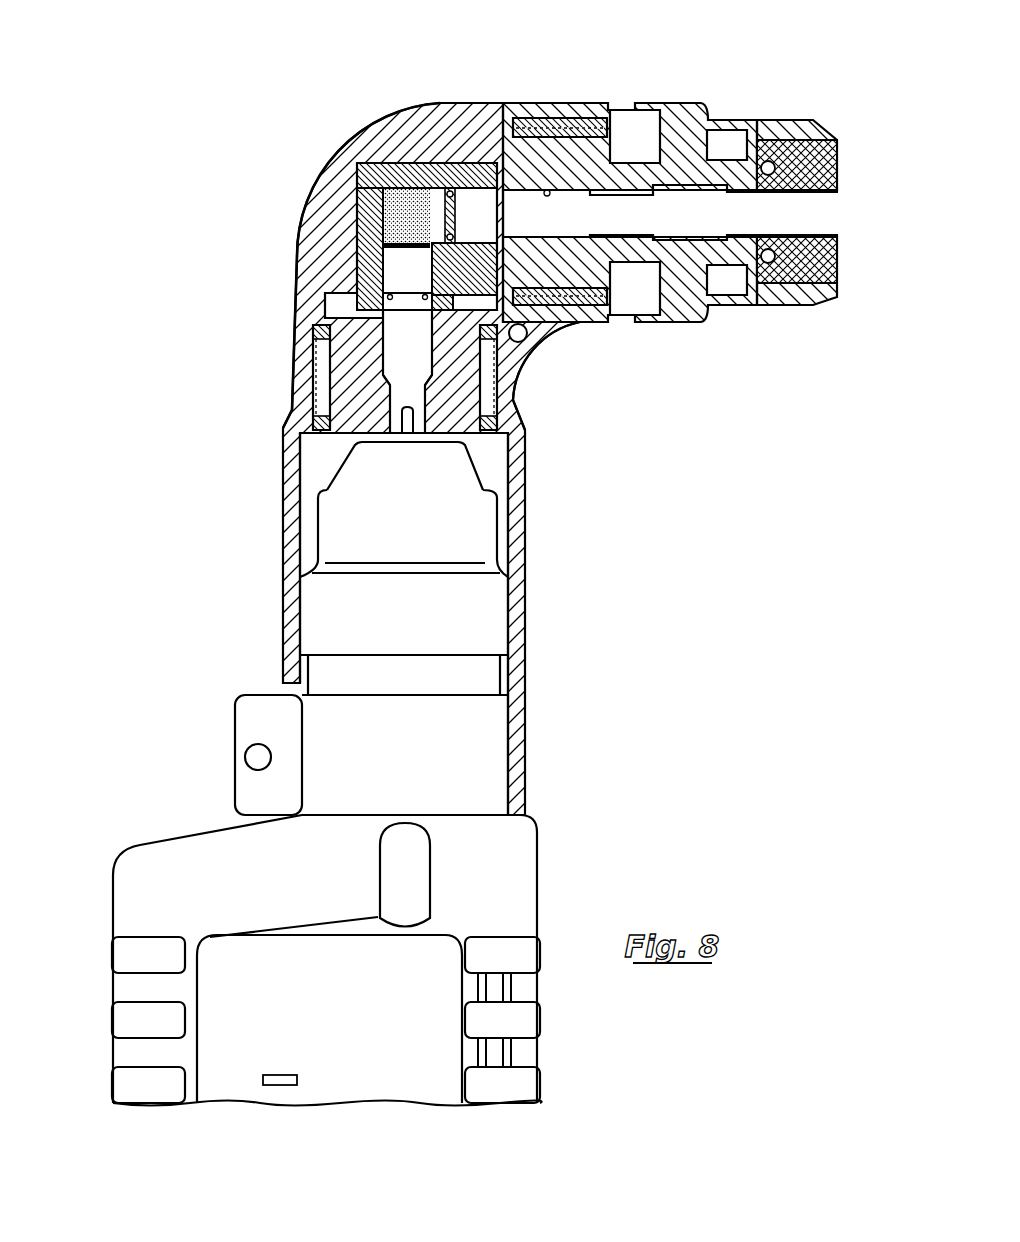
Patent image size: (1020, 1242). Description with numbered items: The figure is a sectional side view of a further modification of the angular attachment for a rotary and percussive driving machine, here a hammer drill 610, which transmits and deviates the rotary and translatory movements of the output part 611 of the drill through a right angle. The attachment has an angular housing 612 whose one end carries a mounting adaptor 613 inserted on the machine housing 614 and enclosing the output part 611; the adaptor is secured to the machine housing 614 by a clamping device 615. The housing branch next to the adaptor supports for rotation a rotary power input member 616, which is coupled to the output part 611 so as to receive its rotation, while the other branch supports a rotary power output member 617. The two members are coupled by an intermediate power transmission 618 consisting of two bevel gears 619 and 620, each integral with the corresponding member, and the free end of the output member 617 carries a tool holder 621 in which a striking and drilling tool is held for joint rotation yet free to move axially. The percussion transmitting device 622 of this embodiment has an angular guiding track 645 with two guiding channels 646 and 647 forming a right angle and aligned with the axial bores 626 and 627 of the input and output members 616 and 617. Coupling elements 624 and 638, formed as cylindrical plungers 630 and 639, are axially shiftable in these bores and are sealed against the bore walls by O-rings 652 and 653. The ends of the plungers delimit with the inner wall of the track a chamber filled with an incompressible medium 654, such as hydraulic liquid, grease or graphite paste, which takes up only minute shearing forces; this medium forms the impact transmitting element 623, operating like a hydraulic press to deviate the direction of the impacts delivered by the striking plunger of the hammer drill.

The hammer drill 610 is at (338, 997).
The output part 611 is at (473, 527).
The angular housing 612 is at (378, 137).
The mounting adaptor 613 is at (397, 624).
The machine housing 614 is at (361, 958).
The clamping device 615 is at (247, 718).
The rotary power input member 616 is at (510, 404).
The rotary power output member 617 is at (577, 208).
The intermediate power transmission 618 is at (528, 327).
The bevel gear 619 is at (325, 301).
The bevel gear 620 is at (482, 140).
The tool holder 621 is at (815, 215).
The percussion transmitting device 622 is at (352, 227).
The impact transmitting element 623 is at (378, 206).
The coupling element 624 is at (398, 366).
The axial bore 626 is at (402, 354).
The axial bore 627 is at (549, 190).
The cylindrical plunger 630 is at (320, 392).
The coupling element 638 is at (590, 222).
The cylindrical plunger 639 is at (707, 123).
The angular guiding track 645 is at (405, 163).
The guiding channel 646 is at (383, 270).
The guiding channel 647 is at (460, 162).
The O-ring 652 is at (340, 318).
The O-ring 653 is at (445, 170).
The incompressible medium 654 is at (349, 158).